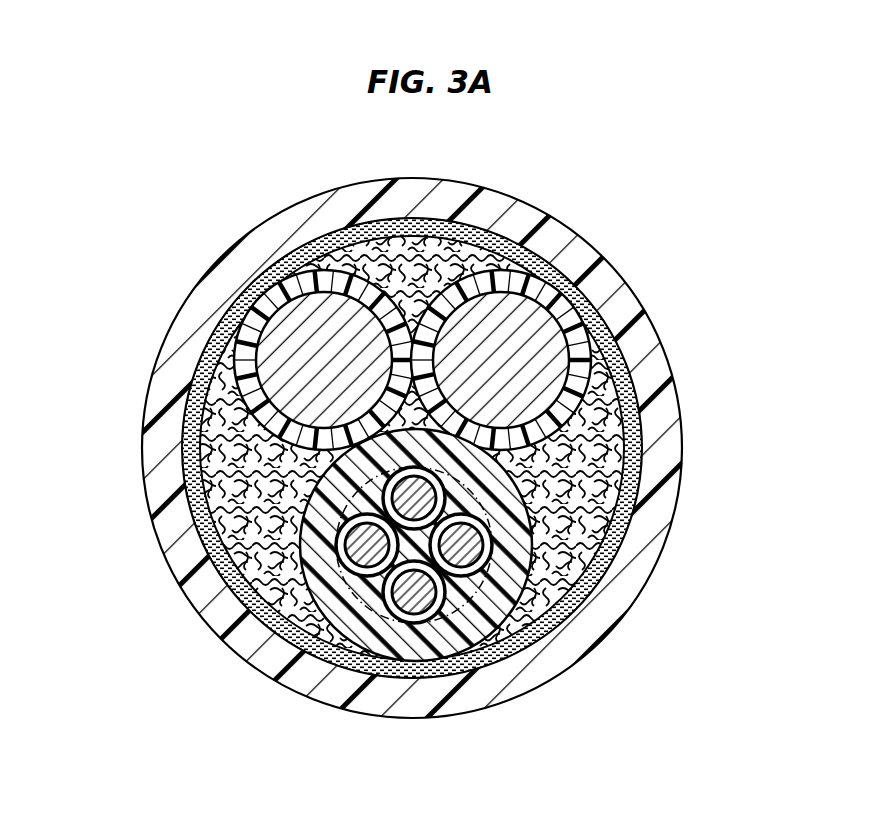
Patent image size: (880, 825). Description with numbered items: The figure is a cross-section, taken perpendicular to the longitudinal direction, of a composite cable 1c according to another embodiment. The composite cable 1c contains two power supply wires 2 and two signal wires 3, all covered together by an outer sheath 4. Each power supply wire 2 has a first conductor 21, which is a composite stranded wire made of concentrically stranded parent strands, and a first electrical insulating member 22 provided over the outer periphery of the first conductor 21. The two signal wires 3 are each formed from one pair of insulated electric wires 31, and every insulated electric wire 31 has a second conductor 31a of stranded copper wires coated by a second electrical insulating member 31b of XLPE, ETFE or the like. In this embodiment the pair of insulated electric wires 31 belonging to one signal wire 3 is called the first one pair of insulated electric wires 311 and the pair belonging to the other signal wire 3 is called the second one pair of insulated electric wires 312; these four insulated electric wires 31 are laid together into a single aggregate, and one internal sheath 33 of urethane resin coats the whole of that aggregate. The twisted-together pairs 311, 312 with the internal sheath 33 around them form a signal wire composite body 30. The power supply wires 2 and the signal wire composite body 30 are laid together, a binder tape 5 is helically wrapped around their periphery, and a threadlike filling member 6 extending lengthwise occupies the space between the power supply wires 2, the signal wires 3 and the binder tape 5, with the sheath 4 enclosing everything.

The composite cable 1c is at (236, 166).
The power supply wire 2 is at (415, 329).
The first conductor 21 is at (556, 318).
The first electrical insulating member 22 is at (545, 345).
The signal wire 3 is at (544, 596).
The signal wire composite body 30 is at (642, 412).
The insulated electric wire 31 is at (562, 624).
The second conductor 31a is at (487, 530).
The second electrical insulating member 31b is at (473, 542).
The first one pair of insulated electric wires 311 is at (367, 555).
The second one pair of insulated electric wires 312 is at (562, 624).
The internal sheath 33 is at (508, 593).
The sheath 4 is at (565, 653).
The binder tape 5 is at (495, 655).
The filling member 6 is at (272, 602).